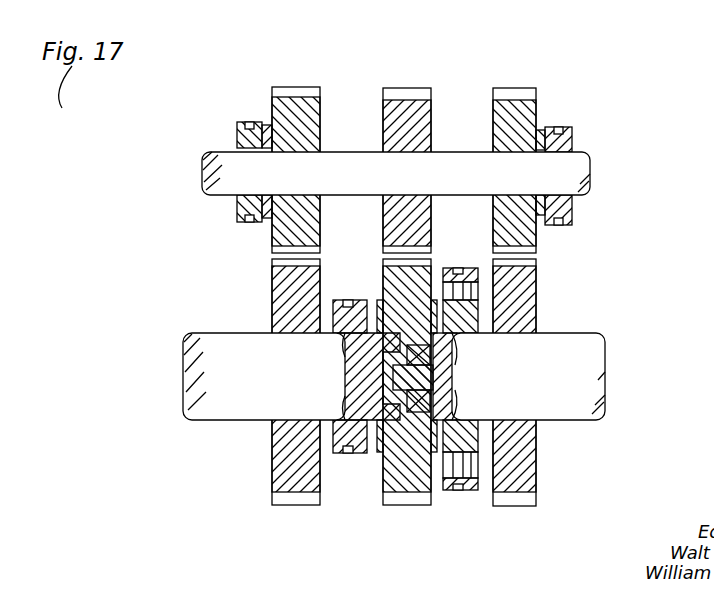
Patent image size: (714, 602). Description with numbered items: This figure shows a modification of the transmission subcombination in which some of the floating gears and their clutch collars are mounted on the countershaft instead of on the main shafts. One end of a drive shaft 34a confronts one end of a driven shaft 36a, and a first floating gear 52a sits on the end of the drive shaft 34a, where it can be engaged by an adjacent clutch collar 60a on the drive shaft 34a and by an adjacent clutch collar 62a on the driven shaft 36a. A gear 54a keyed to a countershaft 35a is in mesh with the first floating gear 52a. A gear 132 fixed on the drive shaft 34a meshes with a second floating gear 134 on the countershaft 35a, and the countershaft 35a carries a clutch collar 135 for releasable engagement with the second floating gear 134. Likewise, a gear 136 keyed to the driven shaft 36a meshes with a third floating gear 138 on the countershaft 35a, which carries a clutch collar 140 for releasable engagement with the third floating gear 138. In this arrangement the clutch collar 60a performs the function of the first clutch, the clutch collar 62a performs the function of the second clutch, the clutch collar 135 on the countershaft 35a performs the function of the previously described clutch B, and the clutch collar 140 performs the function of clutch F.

The gear 132 is at (285, 468).
The second floating gear 134 is at (320, 112).
The clutch collar 135 is at (235, 140).
The gear 136 is at (522, 303).
The third floating gear 138 is at (530, 112).
The clutch collar 140 is at (560, 140).
The drive shaft 34a is at (291, 376).
The countershaft 35a is at (396, 173).
The driven shaft 36a is at (499, 376).
The first floating gear 52a is at (407, 480).
The gear 54a is at (415, 112).
The clutch collar 60a is at (363, 460).
The clutch collar 62a is at (447, 490).